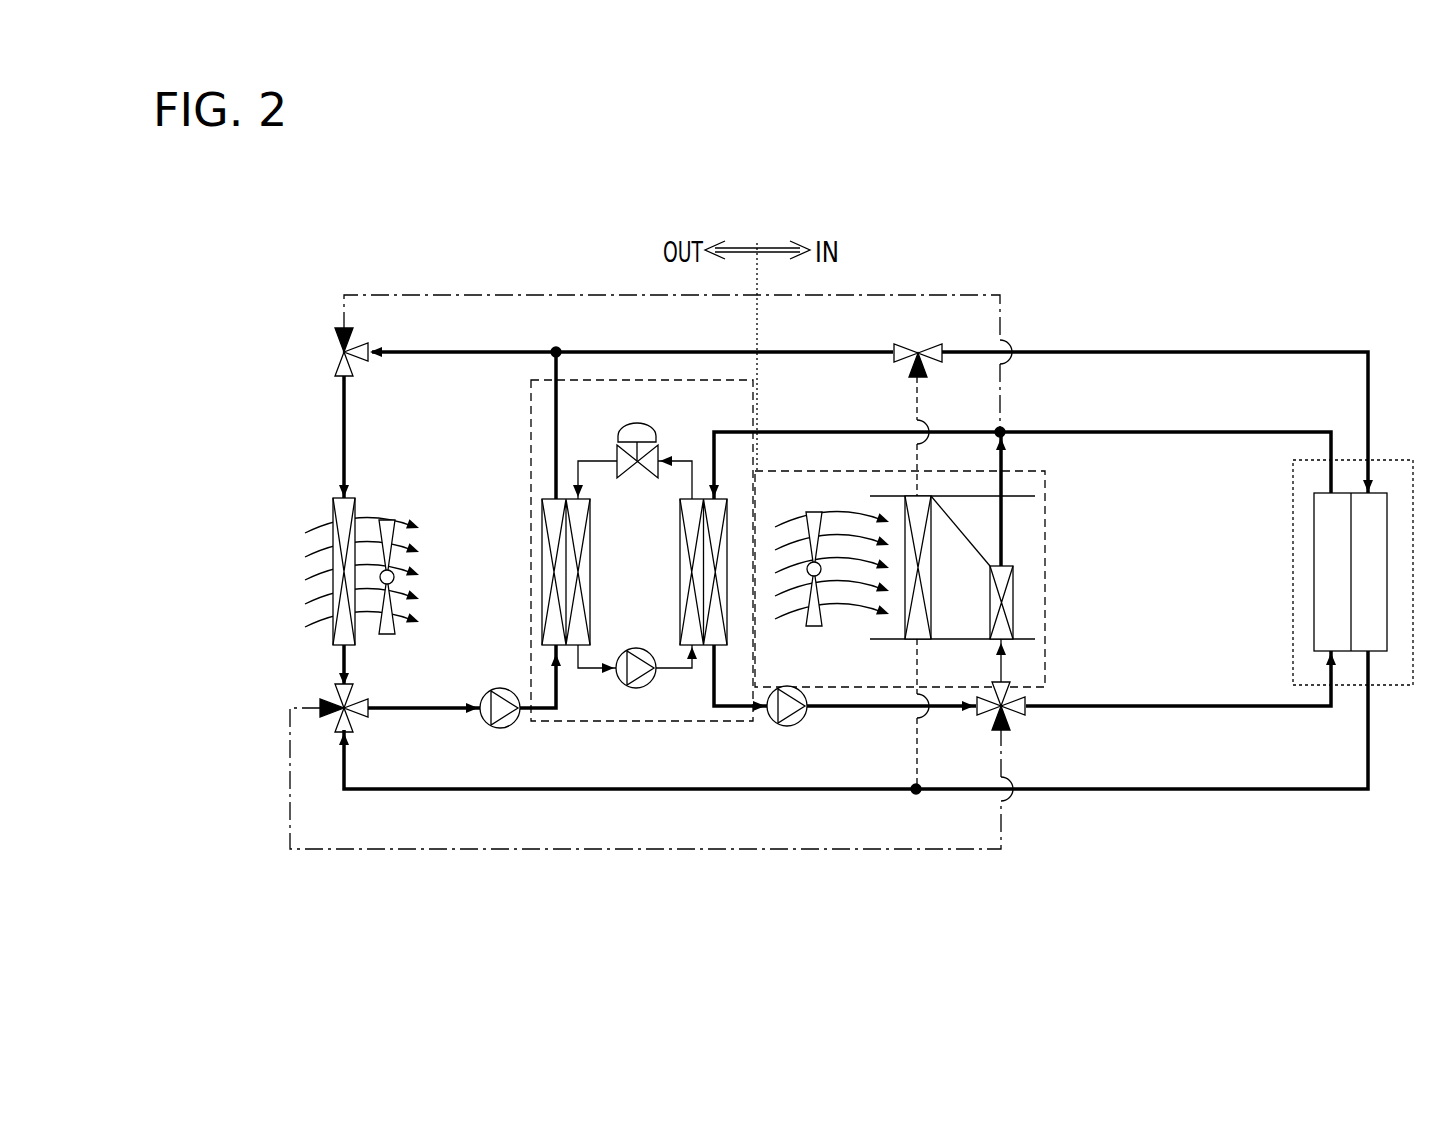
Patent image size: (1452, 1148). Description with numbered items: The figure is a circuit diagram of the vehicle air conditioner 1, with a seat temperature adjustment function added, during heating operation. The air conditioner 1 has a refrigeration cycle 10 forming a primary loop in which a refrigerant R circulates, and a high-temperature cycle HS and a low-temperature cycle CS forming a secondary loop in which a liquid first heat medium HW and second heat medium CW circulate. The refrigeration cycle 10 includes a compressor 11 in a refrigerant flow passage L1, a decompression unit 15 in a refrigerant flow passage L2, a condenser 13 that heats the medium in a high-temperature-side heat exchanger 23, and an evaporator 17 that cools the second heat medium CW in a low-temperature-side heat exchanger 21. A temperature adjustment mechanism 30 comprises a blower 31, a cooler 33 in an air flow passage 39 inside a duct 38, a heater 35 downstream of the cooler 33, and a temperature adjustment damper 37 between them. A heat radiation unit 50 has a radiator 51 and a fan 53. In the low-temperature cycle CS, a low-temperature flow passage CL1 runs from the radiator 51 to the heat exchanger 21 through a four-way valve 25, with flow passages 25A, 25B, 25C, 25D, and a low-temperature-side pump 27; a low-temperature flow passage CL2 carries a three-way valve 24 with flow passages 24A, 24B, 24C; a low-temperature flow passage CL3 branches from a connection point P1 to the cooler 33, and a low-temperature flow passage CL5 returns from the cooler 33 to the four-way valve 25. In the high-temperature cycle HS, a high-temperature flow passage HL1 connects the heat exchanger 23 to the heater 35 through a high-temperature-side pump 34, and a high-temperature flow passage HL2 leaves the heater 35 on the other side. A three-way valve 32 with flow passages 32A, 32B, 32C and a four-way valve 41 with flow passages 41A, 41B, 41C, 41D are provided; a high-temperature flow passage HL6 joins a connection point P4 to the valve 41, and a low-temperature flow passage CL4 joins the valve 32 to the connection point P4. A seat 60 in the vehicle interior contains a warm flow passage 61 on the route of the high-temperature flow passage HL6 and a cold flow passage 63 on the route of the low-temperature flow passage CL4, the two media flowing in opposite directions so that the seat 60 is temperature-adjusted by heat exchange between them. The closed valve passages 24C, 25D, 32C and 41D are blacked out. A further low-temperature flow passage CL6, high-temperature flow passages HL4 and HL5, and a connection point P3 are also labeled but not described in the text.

The vehicle air conditioner 1 is at (912, 240).
The refrigeration cycle 10 is at (645, 372).
The compressor 11 is at (634, 688).
The condenser 13 is at (680, 556).
The decompression unit 15 is at (628, 430).
The evaporator 17 is at (592, 561).
The low-temperature-side heat exchanger 21 is at (543, 556).
The high-temperature-side heat exchanger 23 is at (727, 523).
The three-way valve 24 is at (330, 365).
The flow passage 24A is at (340, 368).
The flow passage 24B is at (360, 345).
The flow passage 24C is at (343, 336).
The four-way valve 25 is at (332, 742).
The flow passage 25A is at (352, 731).
The flow passage 25B is at (357, 704).
The flow passage 25C is at (340, 690).
The flow passage 25D is at (320, 703).
The low-temperature-side pump 27 is at (500, 728).
The temperature adjustment mechanism 30 is at (846, 462).
The blower 31 is at (815, 510).
The three-way valve 32 is at (911, 320).
The flow passage 32A is at (908, 346).
The flow passage 32B is at (932, 350).
The flow passage 32C is at (915, 365).
The cooler 33 is at (932, 450).
The high-temperature-side pump 34 is at (787, 727).
The heater 35 is at (1013, 591).
The temperature adjustment damper 37 is at (970, 541).
The duct 38 is at (1020, 495).
The air flow passage 39 is at (969, 620).
The four-way valve 41 is at (1015, 712).
The flow passage 41A is at (1026, 703).
The flow passage 41B is at (1010, 690).
The flow passage 41C is at (987, 713).
The flow passage 41D is at (1008, 731).
The heat radiation unit 50 is at (398, 593).
The radiator 51 is at (355, 640).
The fan 53 is at (395, 630).
The seat 60 is at (1304, 572).
The warm flow passage 61 is at (1314, 554).
The cold flow passage 63 is at (1351, 612).
The low-temperature flow passage CL1 is at (445, 710).
The low-temperature flow passage CL2 is at (432, 348).
The low-temperature flow passage CL3 is at (593, 348).
The low-temperature flow passage CL4 is at (1320, 348).
The low-temperature flow passage CL5 is at (637, 792).
The sixth cooling line CL6 is at (928, 380).
The high-temperature flow passage HL1 is at (874, 708).
The high-temperature flow passage HL2 is at (995, 430).
The fourth heating line HL4 is at (968, 295).
The fifth heating line HL5 is at (708, 850).
The high-temperature flow passage HL6 is at (1270, 430).
The refrigerant flow passage L1 is at (676, 670).
The refrigerant flow passage L2 is at (682, 460).
The refrigerant R is at (596, 461).
The low-temperature cycle CS is at (503, 341).
The high-temperature cycle HS is at (818, 420).
The first heat medium HW is at (1200, 706).
The second heat medium CW is at (1215, 789).
The connection point P1 is at (552, 347).
The third junction P3 is at (920, 791).
The connection point P4 is at (995, 438).